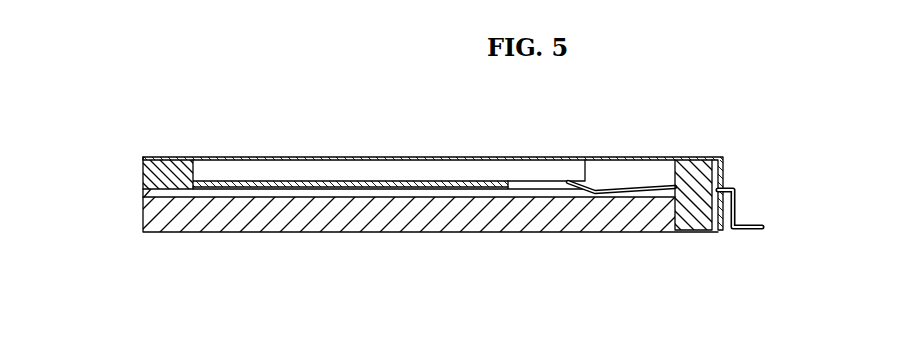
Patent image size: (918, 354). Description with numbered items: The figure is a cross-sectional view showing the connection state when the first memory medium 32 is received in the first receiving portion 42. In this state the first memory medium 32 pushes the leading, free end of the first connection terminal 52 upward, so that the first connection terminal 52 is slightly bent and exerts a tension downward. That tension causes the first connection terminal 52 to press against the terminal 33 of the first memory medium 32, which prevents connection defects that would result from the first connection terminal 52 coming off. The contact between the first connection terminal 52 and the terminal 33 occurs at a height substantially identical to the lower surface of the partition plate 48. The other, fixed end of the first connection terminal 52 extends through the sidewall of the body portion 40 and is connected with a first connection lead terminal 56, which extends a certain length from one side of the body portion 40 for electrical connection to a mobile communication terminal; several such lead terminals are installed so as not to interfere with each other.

The first memory medium 32 is at (177, 233).
The terminal 33 is at (555, 198).
The body portion 40 is at (700, 223).
The first receiving portion 42 is at (121, 211).
The partition plate 48 is at (410, 181).
The first connection terminal 52 is at (620, 192).
The first connection lead terminal 56 is at (736, 210).